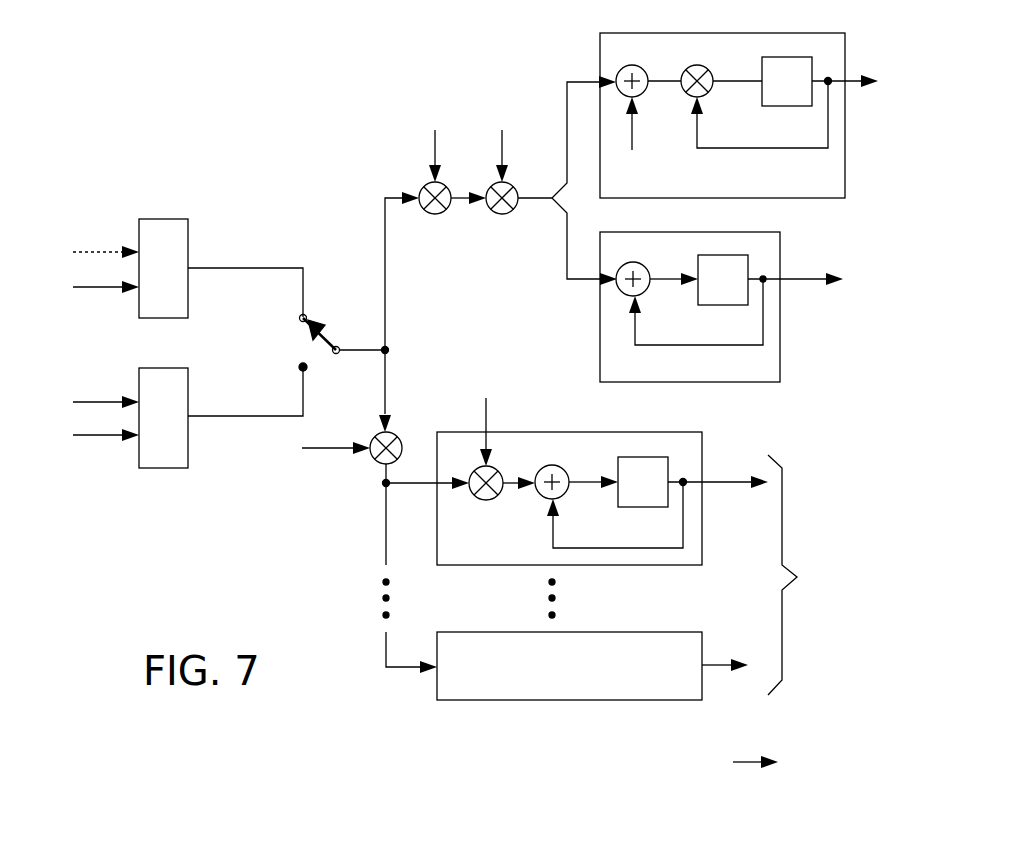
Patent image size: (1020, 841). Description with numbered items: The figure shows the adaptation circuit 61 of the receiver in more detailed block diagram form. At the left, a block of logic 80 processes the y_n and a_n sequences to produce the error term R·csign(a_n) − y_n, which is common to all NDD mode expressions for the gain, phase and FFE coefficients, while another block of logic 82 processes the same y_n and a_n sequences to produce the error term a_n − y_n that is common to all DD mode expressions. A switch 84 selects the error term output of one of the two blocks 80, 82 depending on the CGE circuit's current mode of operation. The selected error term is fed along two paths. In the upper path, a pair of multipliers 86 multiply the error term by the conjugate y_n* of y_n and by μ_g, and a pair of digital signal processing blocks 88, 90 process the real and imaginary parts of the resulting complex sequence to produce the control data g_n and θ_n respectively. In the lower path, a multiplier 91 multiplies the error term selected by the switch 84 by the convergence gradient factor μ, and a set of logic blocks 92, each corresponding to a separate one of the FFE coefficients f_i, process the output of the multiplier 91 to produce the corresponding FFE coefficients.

The adaptation circuit 61 is at (172, 543).
The block of logic 80 is at (177, 282).
The block of logic 82 is at (177, 432).
The switch 84 is at (344, 314).
The pair of multipliers 86 is at (456, 253).
The digital signal processing block 88 is at (754, 192).
The digital signal processing block 90 is at (676, 377).
The multiplier 91 is at (375, 463).
The logic blocks 92 is at (509, 562).